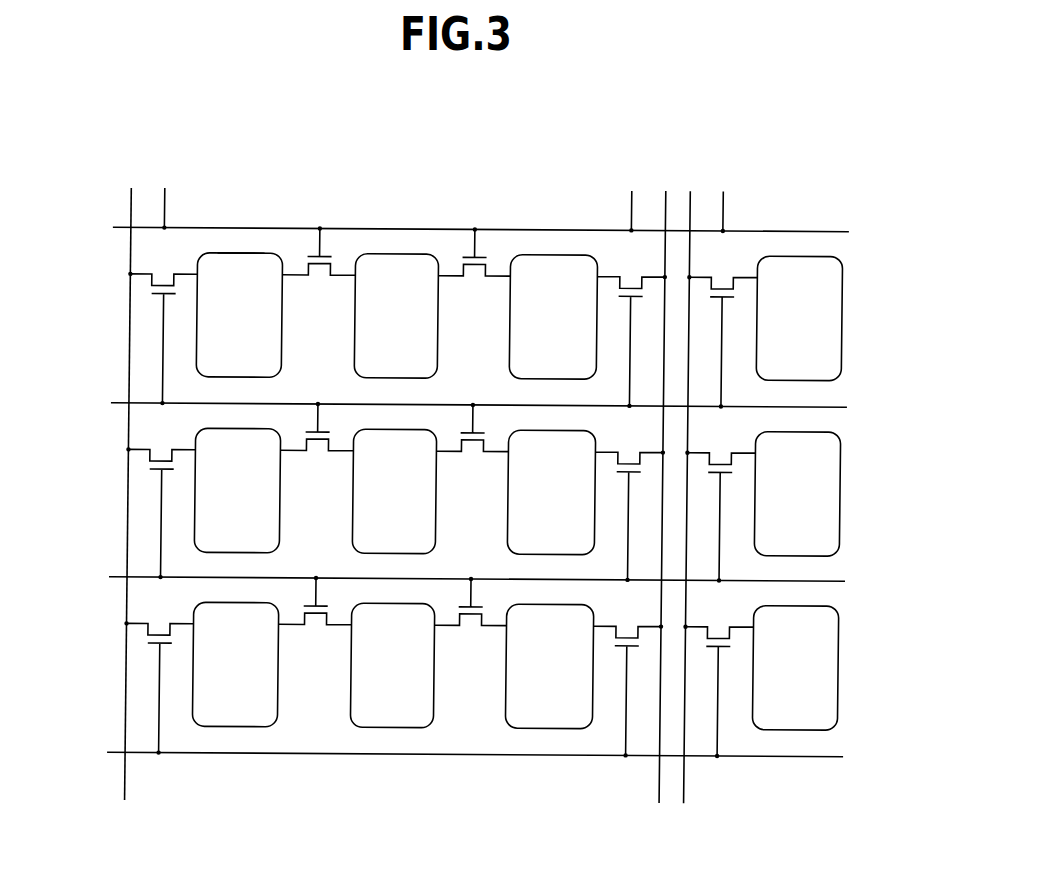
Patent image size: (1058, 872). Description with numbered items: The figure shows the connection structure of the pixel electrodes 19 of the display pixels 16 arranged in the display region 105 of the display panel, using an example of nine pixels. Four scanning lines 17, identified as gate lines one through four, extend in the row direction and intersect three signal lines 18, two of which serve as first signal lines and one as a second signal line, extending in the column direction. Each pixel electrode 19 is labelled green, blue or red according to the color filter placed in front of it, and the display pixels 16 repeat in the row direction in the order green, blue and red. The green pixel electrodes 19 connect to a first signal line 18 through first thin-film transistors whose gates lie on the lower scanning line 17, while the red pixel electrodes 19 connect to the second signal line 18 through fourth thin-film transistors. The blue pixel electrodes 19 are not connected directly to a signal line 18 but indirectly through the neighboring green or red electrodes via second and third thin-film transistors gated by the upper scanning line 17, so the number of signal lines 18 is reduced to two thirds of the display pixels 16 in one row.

The display region 105 is at (798, 148).
The display pixel 16 is at (218, 230).
The scanning line 17 is at (407, 230).
The signal line 18 is at (128, 341).
The pixel electrode 19 is at (241, 252).